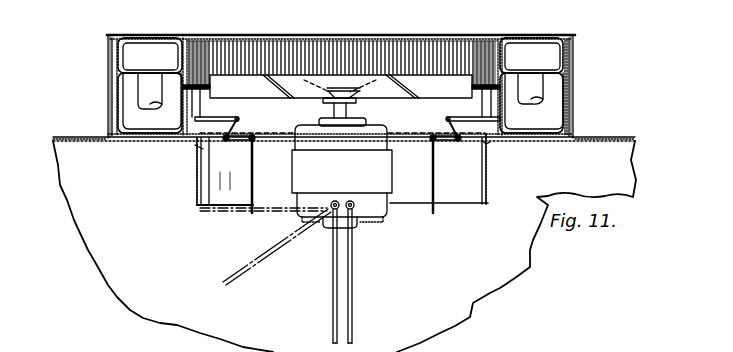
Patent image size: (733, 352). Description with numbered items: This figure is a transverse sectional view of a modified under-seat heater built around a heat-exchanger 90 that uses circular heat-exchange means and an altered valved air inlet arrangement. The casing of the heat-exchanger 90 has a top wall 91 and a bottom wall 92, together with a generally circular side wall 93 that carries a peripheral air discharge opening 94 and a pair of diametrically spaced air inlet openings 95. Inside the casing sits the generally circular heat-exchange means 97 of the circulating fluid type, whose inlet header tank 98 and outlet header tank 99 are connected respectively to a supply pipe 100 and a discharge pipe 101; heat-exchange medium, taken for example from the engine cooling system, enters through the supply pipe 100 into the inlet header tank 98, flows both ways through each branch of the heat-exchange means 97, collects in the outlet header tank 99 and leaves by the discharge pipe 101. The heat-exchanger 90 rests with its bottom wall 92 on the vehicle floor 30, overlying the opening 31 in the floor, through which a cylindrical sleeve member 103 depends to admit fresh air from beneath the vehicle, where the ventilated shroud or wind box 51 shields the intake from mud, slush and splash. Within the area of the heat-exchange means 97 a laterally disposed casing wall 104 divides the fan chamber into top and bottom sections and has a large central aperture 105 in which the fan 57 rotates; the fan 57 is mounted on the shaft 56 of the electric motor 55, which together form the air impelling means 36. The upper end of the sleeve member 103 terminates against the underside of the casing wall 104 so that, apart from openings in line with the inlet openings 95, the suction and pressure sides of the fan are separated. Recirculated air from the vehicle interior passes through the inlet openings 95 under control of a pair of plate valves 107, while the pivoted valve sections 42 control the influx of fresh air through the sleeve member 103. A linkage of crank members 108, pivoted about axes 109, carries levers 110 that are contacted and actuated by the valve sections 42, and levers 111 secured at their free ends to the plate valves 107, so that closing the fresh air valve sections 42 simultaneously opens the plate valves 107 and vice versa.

The vehicle floor 30 is at (62, 137).
The opening 31 is at (488, 141).
The air impelling means 36 is at (352, 149).
The valve sections 42 is at (229, 212).
The shroud or wind box 51 is at (78, 191).
The electric motor 55 is at (317, 150).
The shaft 56 is at (348, 110).
The fan 57 is at (425, 97).
The heat-exchanger 90 is at (445, 33).
The top wall 91 is at (373, 34).
The bottom wall 92 is at (575, 122).
The circular side wall 93 is at (107, 40).
The air discharge opening 94 is at (107, 75).
The air inlet openings 95 is at (200, 107).
The heat-exchange means 97 is at (123, 90).
The inlet header tank 98 is at (124, 50).
The outlet header tank 99 is at (556, 64).
The supply pipe 100 is at (145, 99).
The discharge pipe 101 is at (537, 88).
The sleeve member 103 is at (197, 196).
The casing wall 104 is at (212, 100).
The central aperture 105 is at (408, 99).
The plate valves 107 is at (180, 108).
The crank members 108 is at (240, 135).
The axes 109 is at (212, 146).
The levers 110 is at (254, 178).
The levers 111 is at (196, 146).